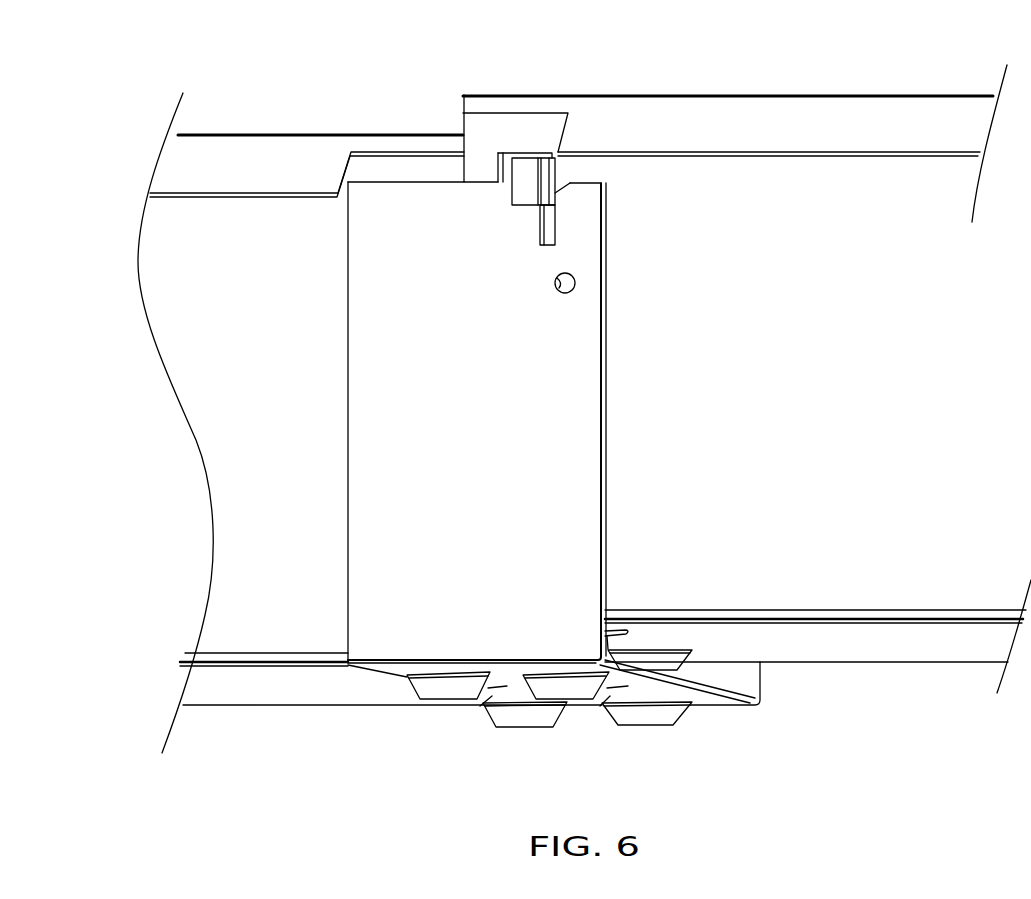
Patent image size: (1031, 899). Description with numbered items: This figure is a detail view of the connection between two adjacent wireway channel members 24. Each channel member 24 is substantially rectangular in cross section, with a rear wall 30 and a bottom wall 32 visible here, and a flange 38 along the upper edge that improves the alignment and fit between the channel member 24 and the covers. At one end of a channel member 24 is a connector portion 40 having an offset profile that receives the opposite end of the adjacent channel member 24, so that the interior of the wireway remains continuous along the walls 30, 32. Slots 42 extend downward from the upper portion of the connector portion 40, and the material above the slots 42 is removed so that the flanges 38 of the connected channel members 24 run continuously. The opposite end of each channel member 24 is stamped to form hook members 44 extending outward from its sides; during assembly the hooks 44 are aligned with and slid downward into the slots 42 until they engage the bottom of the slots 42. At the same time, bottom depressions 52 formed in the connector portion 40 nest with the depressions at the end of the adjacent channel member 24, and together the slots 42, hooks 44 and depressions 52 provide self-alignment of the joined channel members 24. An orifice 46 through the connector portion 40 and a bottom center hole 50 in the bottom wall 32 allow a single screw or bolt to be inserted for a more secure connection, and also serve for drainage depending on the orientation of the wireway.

The channel member 24 is at (812, 80).
The rear wall 30 is at (275, 421).
The bottom wall 32 is at (284, 701).
The flange 38 is at (247, 183).
The connector portion 40 is at (482, 427).
The slot 42 is at (552, 229).
The hook member 44 is at (518, 193).
The orifice 46 is at (556, 282).
The bottom center hole 50 is at (600, 643).
The bottom depression 52 is at (450, 688).